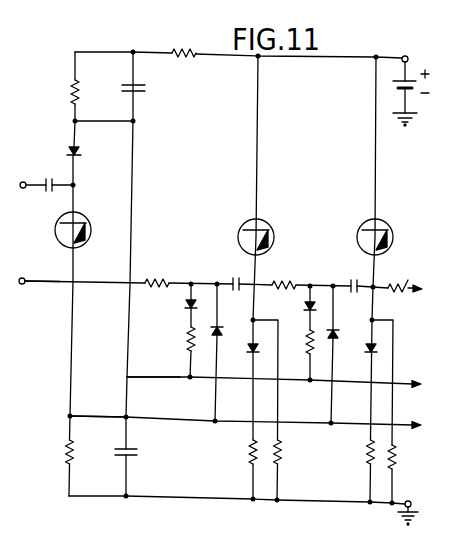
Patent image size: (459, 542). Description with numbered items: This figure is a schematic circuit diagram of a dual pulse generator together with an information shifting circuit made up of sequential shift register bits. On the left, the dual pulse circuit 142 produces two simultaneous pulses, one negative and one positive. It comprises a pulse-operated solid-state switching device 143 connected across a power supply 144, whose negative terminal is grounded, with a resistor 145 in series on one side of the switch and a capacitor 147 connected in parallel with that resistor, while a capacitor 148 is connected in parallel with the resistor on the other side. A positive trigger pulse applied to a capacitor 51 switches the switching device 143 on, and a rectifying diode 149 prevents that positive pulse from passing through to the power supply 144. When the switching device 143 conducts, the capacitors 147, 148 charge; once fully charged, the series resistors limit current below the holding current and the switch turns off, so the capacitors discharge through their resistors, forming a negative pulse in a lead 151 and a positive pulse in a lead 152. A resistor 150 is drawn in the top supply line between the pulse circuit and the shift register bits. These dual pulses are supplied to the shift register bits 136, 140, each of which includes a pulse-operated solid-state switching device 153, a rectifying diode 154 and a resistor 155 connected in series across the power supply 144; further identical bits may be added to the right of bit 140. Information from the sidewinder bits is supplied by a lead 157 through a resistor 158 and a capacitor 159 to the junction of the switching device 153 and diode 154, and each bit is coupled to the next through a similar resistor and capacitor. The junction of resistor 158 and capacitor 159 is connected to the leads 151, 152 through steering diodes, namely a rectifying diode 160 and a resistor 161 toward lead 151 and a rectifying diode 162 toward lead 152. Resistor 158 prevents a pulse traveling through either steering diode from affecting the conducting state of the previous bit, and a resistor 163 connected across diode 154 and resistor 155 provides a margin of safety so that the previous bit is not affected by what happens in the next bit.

The shift register bit 136 is at (280, 140).
The shift register bit 140 is at (74, 452).
The dual pulse circuit 142 is at (59, 168).
The pulse-operated solid-state switching device 143 is at (57, 234).
The power supply 144 is at (396, 84).
The resistor 145 is at (72, 90).
The capacitor 147 is at (137, 94).
The capacitor 148 is at (136, 452).
The rectifying diode 149 is at (77, 158).
The resistor 150 is at (190, 50).
The lead 151 is at (182, 379).
The lead 152 is at (190, 418).
The pulse-operated solid-state switching device 153 is at (358, 239).
The rectifying diode 154 is at (254, 352).
The resistor 155 is at (250, 460).
The lead 157 is at (53, 278).
The resistor 158 is at (176, 266).
The capacitor 159 is at (226, 283).
The rectifying diode 160 is at (187, 305).
The resistor 161 is at (187, 346).
The rectifying diode 162 is at (240, 322).
The resistor 163 is at (280, 462).
The capacitor 51 is at (47, 190).